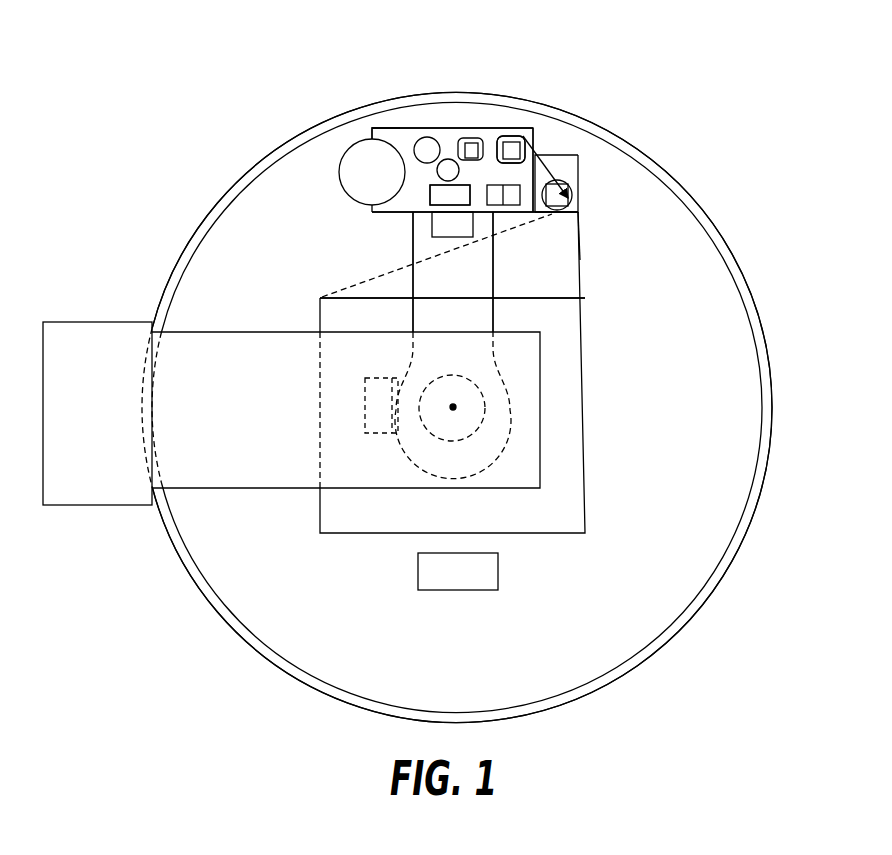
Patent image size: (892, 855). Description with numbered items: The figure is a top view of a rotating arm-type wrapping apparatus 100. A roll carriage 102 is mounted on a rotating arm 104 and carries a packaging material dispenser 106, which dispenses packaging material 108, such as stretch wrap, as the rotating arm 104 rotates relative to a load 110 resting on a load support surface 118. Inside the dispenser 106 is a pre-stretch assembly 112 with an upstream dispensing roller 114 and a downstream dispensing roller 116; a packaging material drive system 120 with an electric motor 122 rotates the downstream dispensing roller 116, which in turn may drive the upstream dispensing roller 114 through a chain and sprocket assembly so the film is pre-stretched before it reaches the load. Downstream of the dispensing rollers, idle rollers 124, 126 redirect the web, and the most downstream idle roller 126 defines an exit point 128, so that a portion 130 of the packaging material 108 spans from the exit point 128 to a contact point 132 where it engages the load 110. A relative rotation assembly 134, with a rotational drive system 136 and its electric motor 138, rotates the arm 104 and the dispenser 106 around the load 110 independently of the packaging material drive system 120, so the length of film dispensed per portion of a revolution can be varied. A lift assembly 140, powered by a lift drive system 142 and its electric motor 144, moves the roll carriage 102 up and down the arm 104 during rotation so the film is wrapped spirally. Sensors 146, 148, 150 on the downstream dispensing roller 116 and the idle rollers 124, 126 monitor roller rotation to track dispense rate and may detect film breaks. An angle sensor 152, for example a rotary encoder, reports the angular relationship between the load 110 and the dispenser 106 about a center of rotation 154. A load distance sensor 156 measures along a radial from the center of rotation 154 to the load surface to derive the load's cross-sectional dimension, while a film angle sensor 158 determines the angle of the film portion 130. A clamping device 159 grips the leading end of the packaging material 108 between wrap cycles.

The rotating arm-type wrapping apparatus 100 is at (160, 153).
The roll carriage 102 is at (404, 141).
The rotating arm 104 is at (480, 313).
The packaging material dispenser 106 is at (372, 137).
The packaging material 108 is at (340, 180).
The load 110 is at (550, 533).
The pre-stretch assembly 112 is at (436, 116).
The upstream dispensing roller 114 is at (427, 137).
The downstream dispensing roller 116 is at (449, 159).
The load support surface 118 is at (722, 497).
The packaging material drive system 120 is at (412, 199).
The electric motor 122 is at (430, 214).
The idle roller 124 is at (523, 136).
The idle roller 126 is at (538, 155).
The exit point 128 is at (578, 212).
The portion of packaging material 130 is at (580, 242).
The contact point 132 is at (320, 298).
The relative rotation assembly 134 is at (507, 463).
The rotational drive system 136 is at (360, 398).
The electric motor 138 is at (385, 433).
The lift assembly 140 is at (500, 213).
The lift drive system 142 is at (480, 220).
The electric motor 144 is at (463, 240).
The sensor 146 is at (471, 138).
The sensor 148 is at (536, 153).
The sensor 150 is at (580, 177).
The angle sensor 152 is at (500, 378).
The center of rotation 154 is at (456, 408).
The load distance sensor 156 is at (493, 185).
The film angle sensor 158 is at (534, 154).
The clamping device 159 is at (418, 570).